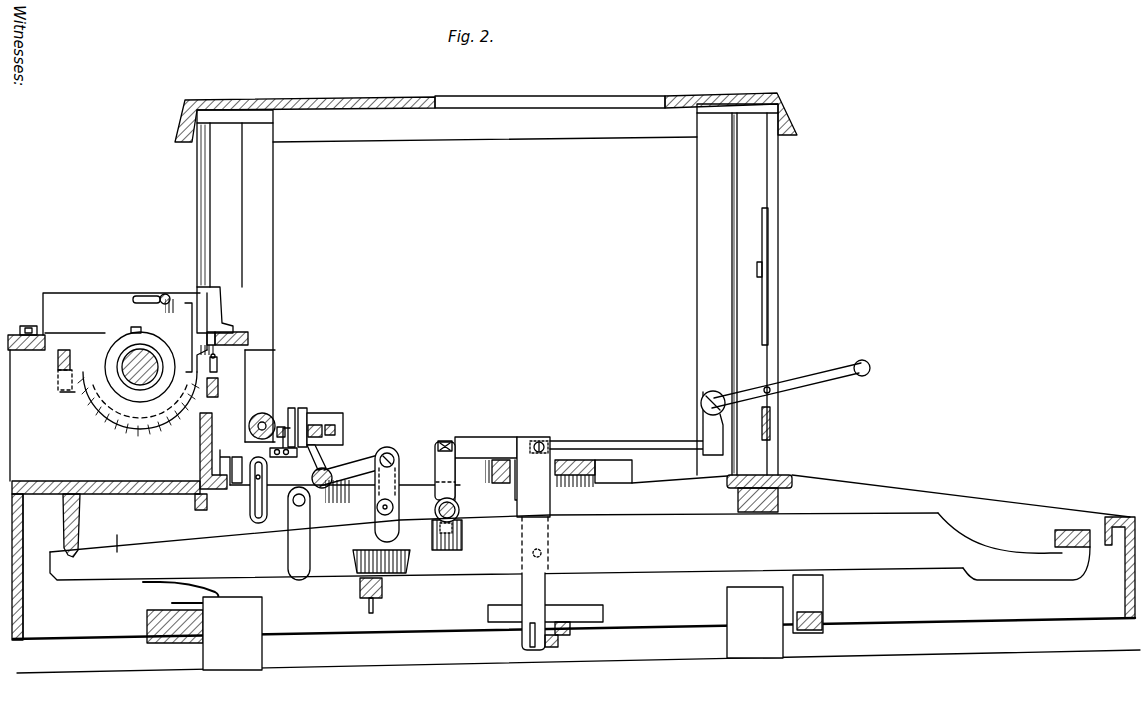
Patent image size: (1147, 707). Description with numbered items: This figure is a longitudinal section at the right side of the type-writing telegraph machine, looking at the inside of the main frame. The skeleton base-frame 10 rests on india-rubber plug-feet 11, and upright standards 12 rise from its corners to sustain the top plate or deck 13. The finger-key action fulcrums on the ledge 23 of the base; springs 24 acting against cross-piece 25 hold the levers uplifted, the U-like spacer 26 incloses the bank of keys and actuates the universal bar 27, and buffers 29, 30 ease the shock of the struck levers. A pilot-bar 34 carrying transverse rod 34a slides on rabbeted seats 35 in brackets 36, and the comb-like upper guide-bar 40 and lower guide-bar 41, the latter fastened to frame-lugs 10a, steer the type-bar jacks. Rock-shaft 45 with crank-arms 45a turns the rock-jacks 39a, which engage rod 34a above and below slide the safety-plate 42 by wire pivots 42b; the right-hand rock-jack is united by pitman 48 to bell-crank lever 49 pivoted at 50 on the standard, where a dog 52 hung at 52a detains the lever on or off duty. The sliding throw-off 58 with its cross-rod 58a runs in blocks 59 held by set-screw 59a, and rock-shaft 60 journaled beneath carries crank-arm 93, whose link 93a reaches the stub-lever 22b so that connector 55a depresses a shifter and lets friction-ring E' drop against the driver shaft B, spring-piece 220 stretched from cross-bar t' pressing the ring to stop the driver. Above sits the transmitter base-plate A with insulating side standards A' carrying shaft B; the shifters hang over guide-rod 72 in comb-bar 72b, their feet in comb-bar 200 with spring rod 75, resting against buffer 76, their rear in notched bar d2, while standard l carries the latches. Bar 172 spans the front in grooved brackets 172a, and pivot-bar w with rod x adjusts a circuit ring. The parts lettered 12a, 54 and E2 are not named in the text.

The base-frame 10 is at (573, 557).
The frame-lugs 10a is at (572, 608).
The plug-feet 11 is at (493, 628).
The upright standards 12 is at (487, 289).
The lug 12a is at (237, 484).
The top plate or deck 13 is at (372, 97).
The stub-lever 22b is at (364, 556).
The fulcrum-ledge 23 is at (88, 524).
The springs 24 is at (162, 590).
The cross-piece 25 is at (146, 623).
The spacer 26 is at (1075, 530).
The universal bar 27 is at (384, 590).
The buffer 29 is at (752, 512).
The buffer 30 is at (824, 608).
The pilot-bar 34 is at (518, 458).
The transverse rod 34a is at (530, 478).
The rabbeted seats 35 is at (494, 472).
The brackets 36 is at (465, 452).
The rock-jacks 39a is at (532, 440).
The upper guide-bar 40 is at (580, 462).
The lower guide-bar 41 is at (566, 636).
The safety-plate 42 is at (550, 648).
The wire pivots 42b is at (531, 648).
The rock-shaft 45 is at (456, 517).
The crank-arms 45a is at (455, 440).
The pitman 48 is at (630, 447).
The bell-crank lever 49 is at (806, 388).
The pivot 50 is at (702, 400).
The dog 52 is at (768, 298).
The pivot 52a is at (762, 268).
The link 54 is at (299, 533).
The connector 55a is at (302, 412).
The throw-off 58 is at (320, 424).
The cross-rod 58a is at (344, 446).
The blocks 59 is at (343, 414).
The set-screw 59a is at (343, 431).
The rock-shaft 60 is at (323, 496).
The upper guide-rod 72 is at (218, 364).
The comb-bar 72b is at (220, 389).
The cross-rod 75 is at (260, 522).
The buffer 76 is at (254, 427).
The crank-arm 93 is at (354, 477).
The link 93a is at (397, 474).
The transverse bar 172 is at (243, 335).
The grooved brackets 172a is at (232, 304).
The comb-bar 200 is at (222, 457).
The spring-piece 220 is at (131, 332).
The base-plate A is at (108, 387).
The side standards A' is at (120, 415).
The fluted shaft B is at (122, 393).
The friction-ring E' is at (181, 337).
The plate E2 is at (252, 351).
The bar d2 is at (58, 356).
The standard l is at (199, 433).
The cross-bar t' is at (26, 329).
The pivot-bar w is at (165, 293).
The transverse rod x is at (141, 295).